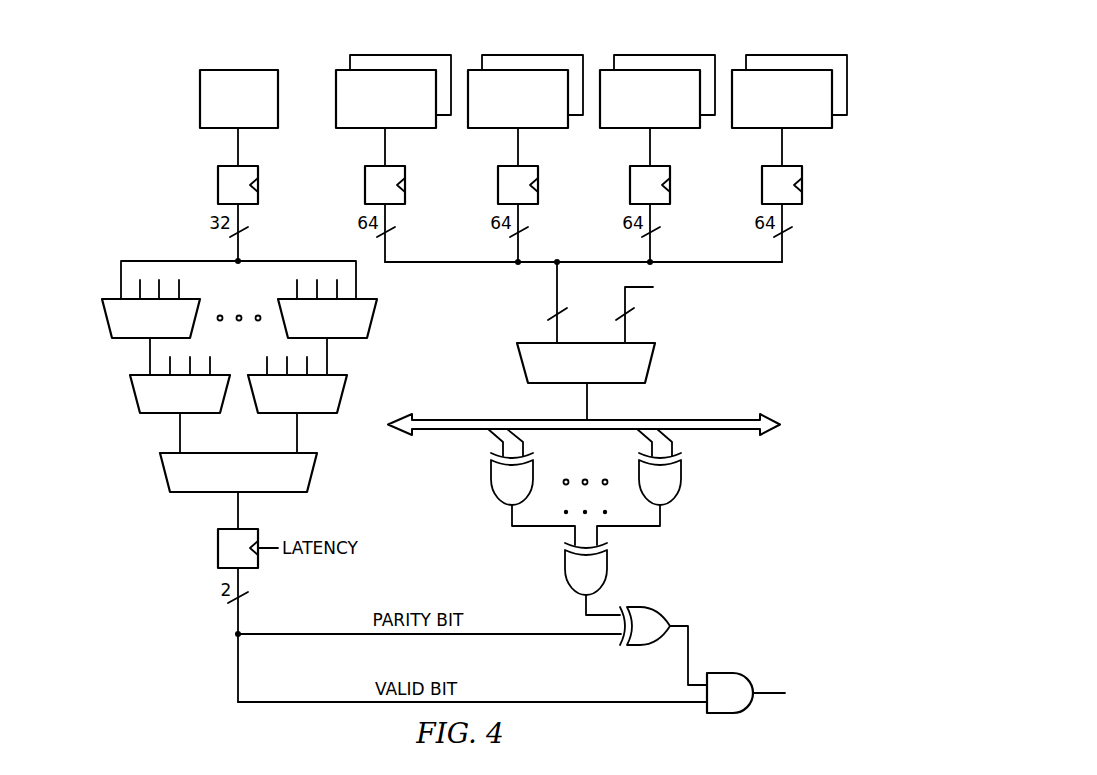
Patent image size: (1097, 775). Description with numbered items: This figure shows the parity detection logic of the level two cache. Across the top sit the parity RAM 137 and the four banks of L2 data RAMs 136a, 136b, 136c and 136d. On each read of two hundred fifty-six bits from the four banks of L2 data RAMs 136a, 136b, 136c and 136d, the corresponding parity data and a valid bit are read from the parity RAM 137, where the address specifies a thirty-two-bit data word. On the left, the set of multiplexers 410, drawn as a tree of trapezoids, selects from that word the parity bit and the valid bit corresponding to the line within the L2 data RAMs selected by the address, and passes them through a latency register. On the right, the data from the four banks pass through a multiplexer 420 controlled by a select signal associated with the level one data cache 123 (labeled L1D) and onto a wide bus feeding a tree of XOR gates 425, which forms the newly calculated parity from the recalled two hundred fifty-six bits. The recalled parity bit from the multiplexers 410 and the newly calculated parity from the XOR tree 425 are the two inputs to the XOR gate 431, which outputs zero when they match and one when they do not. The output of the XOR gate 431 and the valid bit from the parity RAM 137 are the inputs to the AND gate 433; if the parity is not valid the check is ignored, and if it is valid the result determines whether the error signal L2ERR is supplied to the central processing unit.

The parity RAM 137 is at (200, 100).
The L2 data RAM 136a is at (400, 55).
The L2 data RAM 136b is at (532, 55).
The L2 data RAM 136c is at (664, 55).
The L2 data RAM 136d is at (796, 55).
The set of multiplexers 410 is at (93, 257).
The data multiplexer 420 is at (650, 364).
The level one data cache 123 is at (697, 286).
The tree of XOR gates 425 is at (788, 413).
The XOR gate 431 is at (640, 648).
The AND gate 433 is at (732, 673).